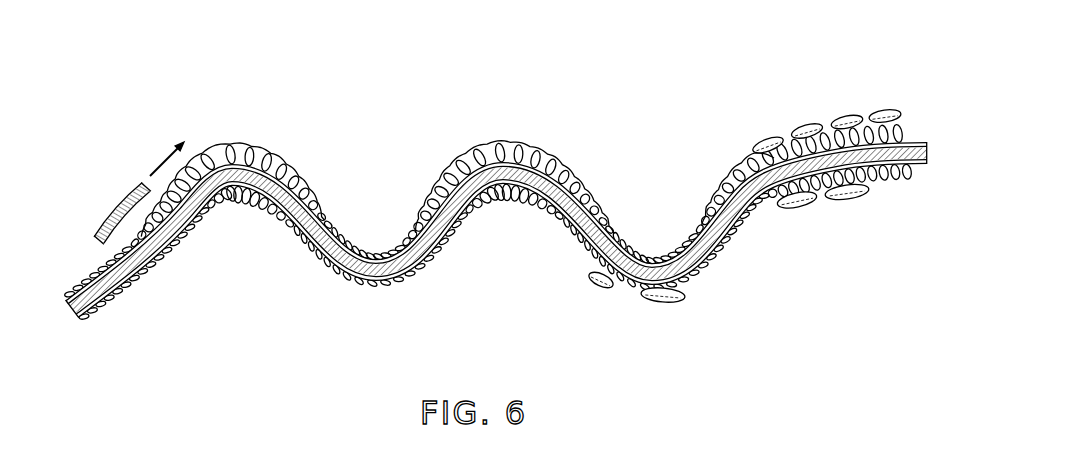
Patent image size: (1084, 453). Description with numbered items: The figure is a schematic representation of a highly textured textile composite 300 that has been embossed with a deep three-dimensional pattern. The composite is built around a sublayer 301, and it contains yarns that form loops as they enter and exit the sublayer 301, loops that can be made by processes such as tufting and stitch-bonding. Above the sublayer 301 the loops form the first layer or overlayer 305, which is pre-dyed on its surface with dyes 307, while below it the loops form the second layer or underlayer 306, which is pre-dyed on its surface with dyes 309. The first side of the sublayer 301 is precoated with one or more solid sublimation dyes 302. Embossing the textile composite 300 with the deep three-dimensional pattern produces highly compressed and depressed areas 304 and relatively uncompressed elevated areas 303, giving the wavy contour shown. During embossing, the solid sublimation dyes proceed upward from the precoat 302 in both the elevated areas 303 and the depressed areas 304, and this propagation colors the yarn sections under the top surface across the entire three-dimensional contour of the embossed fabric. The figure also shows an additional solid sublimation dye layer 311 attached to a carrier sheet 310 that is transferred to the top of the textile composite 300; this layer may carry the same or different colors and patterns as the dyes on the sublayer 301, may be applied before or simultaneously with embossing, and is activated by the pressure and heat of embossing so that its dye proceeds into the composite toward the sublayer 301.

The textile composite 300 is at (840, 36).
The sublayer 301 is at (920, 165).
The solid sublimation dyes 302 is at (922, 142).
The elevated areas 303 is at (483, 140).
The depressed areas 304 is at (363, 256).
The overlayer 305 is at (265, 141).
The underlayer 306 is at (170, 264).
The dyes 307 is at (808, 125).
The dyes 309 is at (848, 201).
The carrier sheet 310 is at (115, 192).
The additional solid sublimation dye layer 311 is at (98, 247).